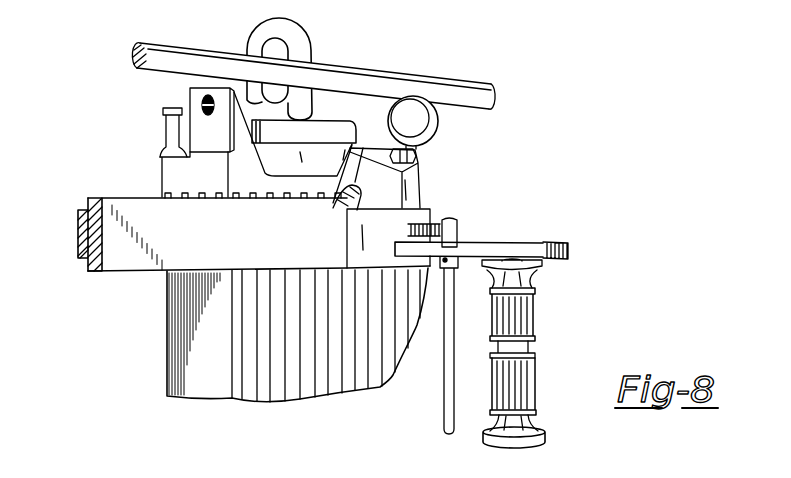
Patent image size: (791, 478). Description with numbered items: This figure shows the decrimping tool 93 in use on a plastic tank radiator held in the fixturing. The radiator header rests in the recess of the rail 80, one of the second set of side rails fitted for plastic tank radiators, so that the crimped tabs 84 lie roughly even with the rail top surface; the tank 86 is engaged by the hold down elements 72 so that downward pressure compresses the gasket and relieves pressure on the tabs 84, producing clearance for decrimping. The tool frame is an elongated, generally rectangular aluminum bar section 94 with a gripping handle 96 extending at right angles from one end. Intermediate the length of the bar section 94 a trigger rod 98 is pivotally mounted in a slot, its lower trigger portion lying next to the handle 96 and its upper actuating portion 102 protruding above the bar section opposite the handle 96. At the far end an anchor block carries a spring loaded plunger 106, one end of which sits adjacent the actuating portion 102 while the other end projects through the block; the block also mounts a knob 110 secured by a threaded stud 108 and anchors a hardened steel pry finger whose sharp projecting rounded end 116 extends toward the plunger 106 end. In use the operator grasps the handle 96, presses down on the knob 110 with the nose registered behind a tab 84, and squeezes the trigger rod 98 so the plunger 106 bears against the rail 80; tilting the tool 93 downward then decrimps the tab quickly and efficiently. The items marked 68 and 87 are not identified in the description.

The rod 68 is at (434, 78).
The hold down element 72 is at (293, 20).
The rail 80 is at (78, 240).
The crimped tab 84 is at (315, 200).
The tank 86 is at (165, 156).
The block foot 87 is at (92, 273).
The decrimping tool 93 is at (606, 211).
The bar section 94 is at (558, 258).
The gripping handle 96 is at (535, 328).
The trigger rod 98 is at (443, 384).
The actuating portion 102 is at (458, 226).
The spring loaded plunger 106 is at (438, 222).
The stud 108 is at (416, 156).
The knob 110 is at (438, 140).
The sharp projecting rounded end 116 is at (350, 210).